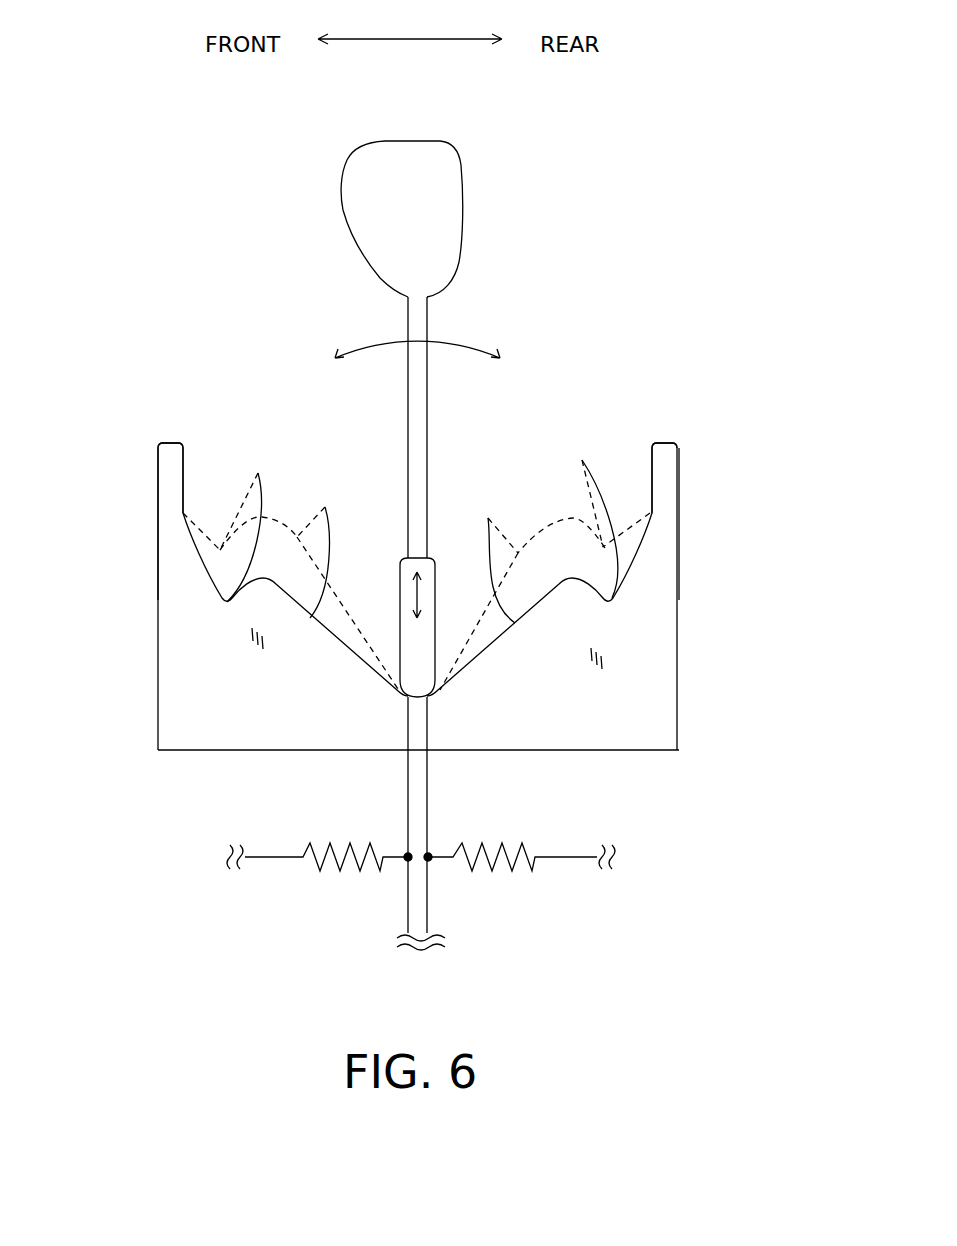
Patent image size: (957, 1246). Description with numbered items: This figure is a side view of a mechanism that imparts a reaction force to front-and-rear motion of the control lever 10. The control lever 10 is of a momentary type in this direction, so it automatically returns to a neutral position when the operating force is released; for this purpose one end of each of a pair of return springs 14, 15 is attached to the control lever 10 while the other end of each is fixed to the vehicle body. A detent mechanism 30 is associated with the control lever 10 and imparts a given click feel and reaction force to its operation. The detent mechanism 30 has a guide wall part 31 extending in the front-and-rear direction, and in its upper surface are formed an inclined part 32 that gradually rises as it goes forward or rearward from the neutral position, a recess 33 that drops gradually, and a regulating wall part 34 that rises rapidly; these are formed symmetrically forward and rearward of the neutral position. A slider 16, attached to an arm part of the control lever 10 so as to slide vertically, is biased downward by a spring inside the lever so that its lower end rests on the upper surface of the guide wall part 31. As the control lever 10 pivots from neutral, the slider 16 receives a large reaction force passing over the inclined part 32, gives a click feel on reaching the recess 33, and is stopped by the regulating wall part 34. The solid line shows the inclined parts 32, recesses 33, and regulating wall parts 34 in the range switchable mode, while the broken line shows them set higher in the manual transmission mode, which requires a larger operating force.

The control lever 10 is at (427, 415).
The return spring 14 is at (327, 872).
The return spring 15 is at (530, 872).
The slider (guide pin) 16 is at (406, 633).
The detent mechanism 30 is at (681, 596).
The guide wall part 31 is at (668, 686).
The inclined part 32 is at (325, 512).
The recess 33 is at (258, 478).
The regulating wall part 34 is at (186, 464).